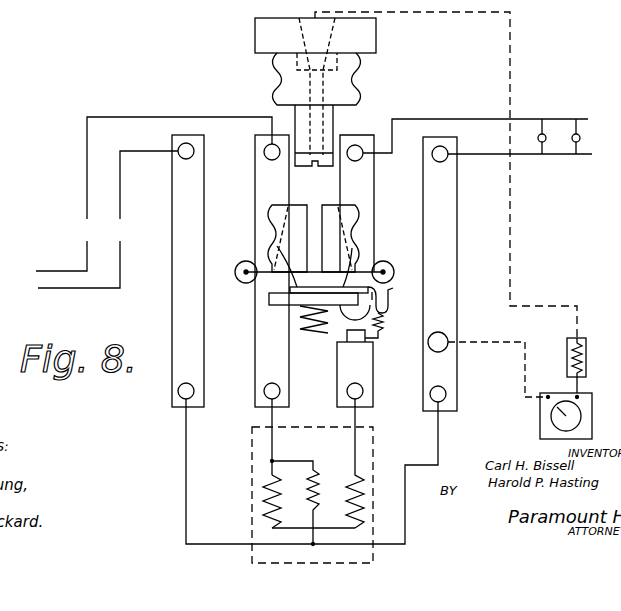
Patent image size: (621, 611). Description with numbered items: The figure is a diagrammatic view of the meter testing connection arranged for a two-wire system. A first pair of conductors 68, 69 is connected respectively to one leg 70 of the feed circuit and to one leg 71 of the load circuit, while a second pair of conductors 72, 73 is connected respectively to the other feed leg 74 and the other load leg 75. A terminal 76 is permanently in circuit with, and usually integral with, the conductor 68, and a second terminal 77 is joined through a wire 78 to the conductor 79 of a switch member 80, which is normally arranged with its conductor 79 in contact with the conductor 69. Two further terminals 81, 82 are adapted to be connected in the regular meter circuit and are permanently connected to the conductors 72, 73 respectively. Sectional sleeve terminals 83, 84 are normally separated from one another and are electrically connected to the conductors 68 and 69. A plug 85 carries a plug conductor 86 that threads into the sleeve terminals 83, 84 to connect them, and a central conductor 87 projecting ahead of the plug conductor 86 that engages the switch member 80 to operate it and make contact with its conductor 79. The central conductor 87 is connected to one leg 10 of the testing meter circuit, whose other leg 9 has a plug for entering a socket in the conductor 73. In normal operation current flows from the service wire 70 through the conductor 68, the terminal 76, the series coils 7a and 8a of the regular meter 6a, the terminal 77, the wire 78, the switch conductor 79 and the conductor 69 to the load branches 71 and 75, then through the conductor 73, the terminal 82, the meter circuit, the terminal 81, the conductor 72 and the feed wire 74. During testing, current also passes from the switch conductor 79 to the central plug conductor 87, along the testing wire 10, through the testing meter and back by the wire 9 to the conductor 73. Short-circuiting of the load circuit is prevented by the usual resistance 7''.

The leg of the testing meter circuit 10 is at (512, 50).
The plug 85 is at (262, 36).
The plug conductor 86 is at (277, 82).
The central conductor 87 is at (322, 160).
The leg of the feed circuit 70 is at (113, 117).
The leg of the load circuit 71 is at (456, 114).
The leg of the feed circuit 74 is at (120, 191).
The leg of the load circuit 75 is at (500, 156).
The conductor 72 is at (175, 262).
The conductor 68 is at (255, 172).
The conductor 69 is at (374, 173).
The conductor 73 is at (455, 294).
The terminal 77 is at (364, 391).
The sectional sleeve terminal 83 is at (271, 220).
The sectional sleeve terminal 84 is at (352, 221).
The switch member 80 is at (310, 299).
The conductor of the switch member 79 is at (380, 295).
The wire 78 is at (382, 327).
The terminal 81 is at (170, 396).
The terminal 76 is at (255, 394).
The terminal 82 is at (450, 395).
The leg of the testing meter circuit 9 is at (527, 342).
The regular meter 6a is at (252, 556).
The series coil 7a is at (262, 492).
The resistance 7'' is at (304, 491).
The series coil 8a is at (357, 505).